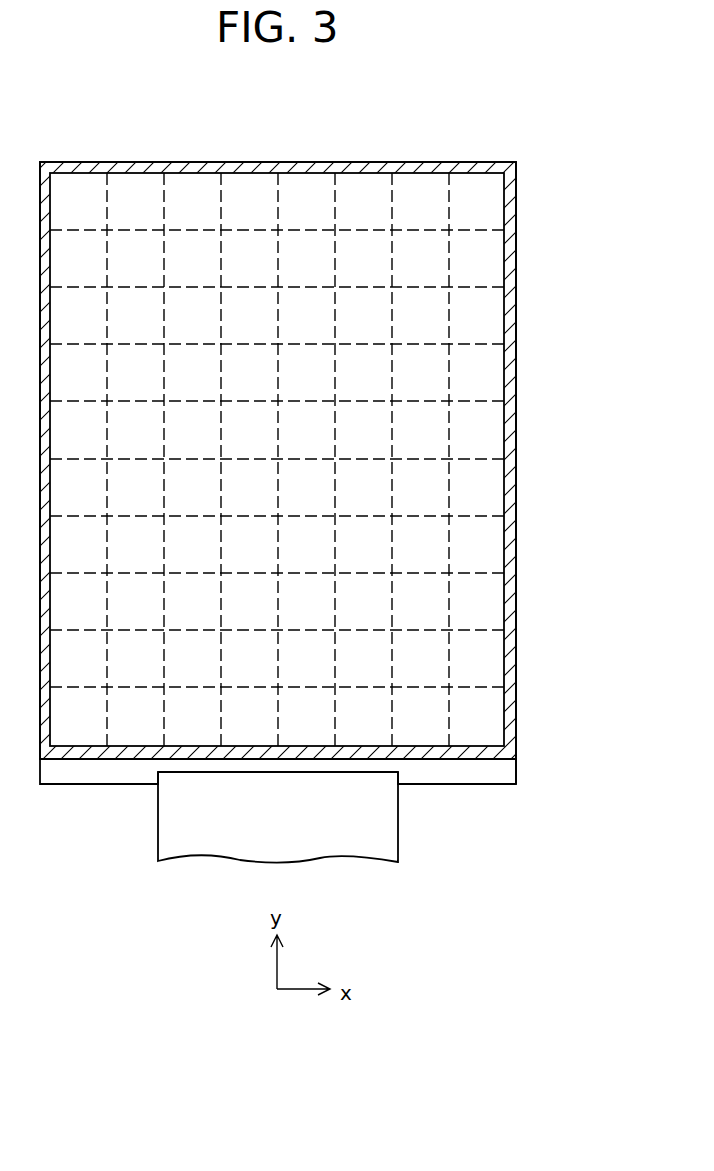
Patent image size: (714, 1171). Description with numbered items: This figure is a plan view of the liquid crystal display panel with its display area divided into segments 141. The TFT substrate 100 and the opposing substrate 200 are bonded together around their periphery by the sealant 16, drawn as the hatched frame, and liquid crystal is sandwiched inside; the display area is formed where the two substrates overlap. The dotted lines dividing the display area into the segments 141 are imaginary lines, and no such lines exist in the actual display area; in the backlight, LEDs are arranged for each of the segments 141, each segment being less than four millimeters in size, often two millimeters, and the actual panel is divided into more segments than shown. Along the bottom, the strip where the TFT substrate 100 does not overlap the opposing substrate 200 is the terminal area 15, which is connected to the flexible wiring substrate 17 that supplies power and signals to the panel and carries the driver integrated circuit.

The segment 141 is at (416, 200).
The sealant 16 is at (512, 392).
The opposing substrate 200 is at (516, 653).
The TFT substrate 100 is at (516, 770).
The terminal area 15 is at (457, 778).
The flexible wiring substrate 17 is at (158, 828).